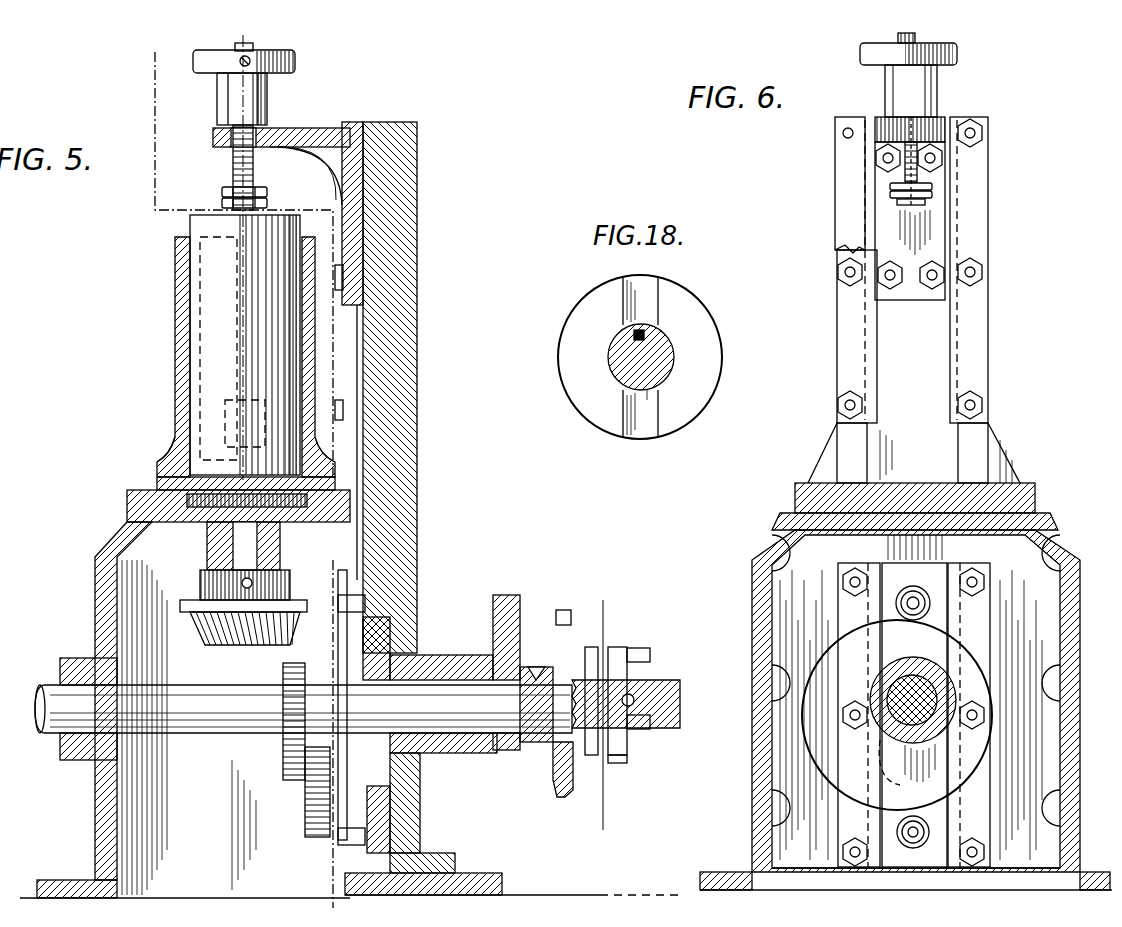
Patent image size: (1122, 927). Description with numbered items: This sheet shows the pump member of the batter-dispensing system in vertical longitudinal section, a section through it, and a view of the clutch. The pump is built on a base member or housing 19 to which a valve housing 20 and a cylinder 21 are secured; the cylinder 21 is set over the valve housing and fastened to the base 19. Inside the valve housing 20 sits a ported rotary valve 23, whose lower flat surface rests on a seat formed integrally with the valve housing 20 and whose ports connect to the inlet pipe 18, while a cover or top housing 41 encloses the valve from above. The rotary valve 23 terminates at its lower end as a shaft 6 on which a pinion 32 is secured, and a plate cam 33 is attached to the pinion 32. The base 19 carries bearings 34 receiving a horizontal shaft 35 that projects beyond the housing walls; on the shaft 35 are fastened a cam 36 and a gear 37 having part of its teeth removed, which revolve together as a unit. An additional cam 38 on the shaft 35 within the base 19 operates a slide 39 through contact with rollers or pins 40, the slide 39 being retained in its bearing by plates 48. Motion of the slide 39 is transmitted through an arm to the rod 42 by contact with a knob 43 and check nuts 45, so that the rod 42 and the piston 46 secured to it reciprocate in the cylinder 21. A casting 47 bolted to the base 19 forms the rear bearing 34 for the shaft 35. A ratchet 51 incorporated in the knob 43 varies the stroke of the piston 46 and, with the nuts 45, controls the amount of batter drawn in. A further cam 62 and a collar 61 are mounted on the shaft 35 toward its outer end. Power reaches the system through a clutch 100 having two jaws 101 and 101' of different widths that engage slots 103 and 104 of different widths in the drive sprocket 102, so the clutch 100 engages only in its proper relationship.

In FIG. 5, the shaft 6 is at (152, 52).
In FIG. 6, the shaft 6 is at (945, 118).
In FIG. 5, the inlet pipe 18 is at (601, 600).
In FIG. 5, the base member or housing 19 is at (95, 585).
In FIG. 6, the base member or housing 19 is at (752, 635).
In FIG. 5, the valve housing 20 is at (127, 514).
In FIG. 6, the valve housing 20 is at (782, 507).
In FIG. 5, the cylinder 21 is at (176, 290).
In FIG. 6, the cylinder 21 is at (795, 484).
In FIG. 5, the rotary valve 23 is at (160, 482).
In FIG. 5, the pinion 32 is at (222, 652).
In FIG. 5, the plate cam 33 is at (192, 620).
In FIG. 5, the bearings 34 is at (80, 658).
In FIG. 5, the shaft 35 is at (200, 726).
In FIG. 18, the shaft 35 is at (672, 360).
In FIG. 6, the shaft 35 is at (912, 675).
In FIG. 5, the cam 36 is at (306, 815).
In FIG. 5, the gear 37 is at (283, 672).
In FIG. 5, the cam 38 is at (385, 650).
In FIG. 6, the cam 38 is at (985, 745).
In FIG. 5, the slide 39 is at (400, 472).
In FIG. 6, the slide 39 is at (867, 212).
In FIG. 5, the rollers or pins 40 is at (385, 575).
In FIG. 6, the rollers or pins 40 is at (913, 587).
In FIG. 5, the cover or top housing 41 is at (163, 462).
In FIG. 5, the rod 42 is at (233, 172).
In FIG. 5, the knob 43 is at (217, 97).
In FIG. 6, the knob 43 is at (937, 85).
In FIG. 5, the check nuts 45 is at (265, 200).
In FIG. 5, the piston 46 is at (205, 325).
In FIG. 5, the casting 47 is at (412, 328).
In FIG. 6, the plates 48 is at (990, 208).
In FIG. 5, the ratchet 51 is at (268, 50).
In FIG. 6, the ratchet 51 is at (918, 38).
In FIG. 5, the collar 61 is at (530, 665).
In FIG. 5, the cam 62 is at (510, 594).
In FIG. 5, the clutch 100 is at (626, 704).
In FIG. 18, the clutch 100 is at (700, 318).
In FIG. 5, the jaw 101 is at (630, 683).
In FIG. 18, the jaw 101 is at (666, 296).
In FIG. 5, the jaw 101' is at (629, 775).
In FIG. 18, the jaw 101' is at (659, 426).
In FIG. 5, the drive sprocket 102 is at (558, 612).
In FIG. 5, the slot 103 is at (592, 647).
In FIG. 5, the slot 104 is at (575, 765).